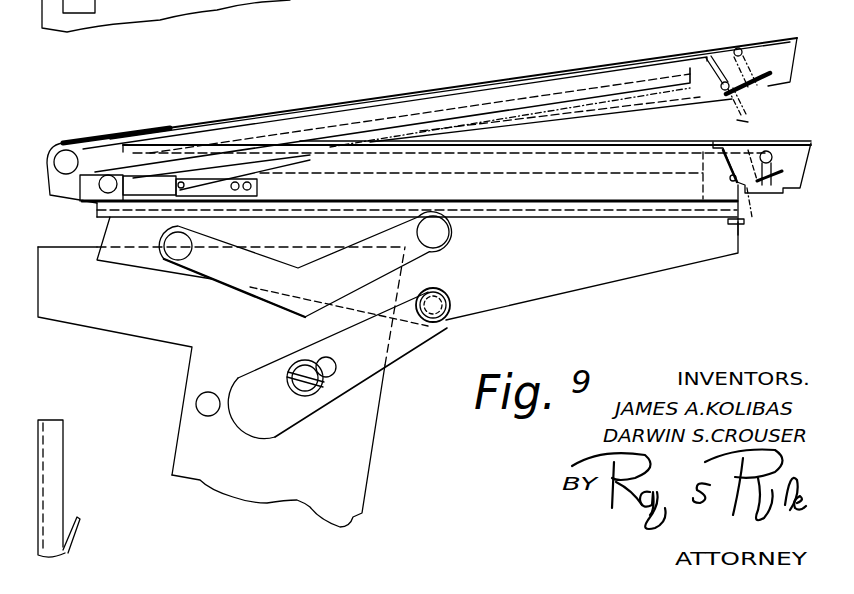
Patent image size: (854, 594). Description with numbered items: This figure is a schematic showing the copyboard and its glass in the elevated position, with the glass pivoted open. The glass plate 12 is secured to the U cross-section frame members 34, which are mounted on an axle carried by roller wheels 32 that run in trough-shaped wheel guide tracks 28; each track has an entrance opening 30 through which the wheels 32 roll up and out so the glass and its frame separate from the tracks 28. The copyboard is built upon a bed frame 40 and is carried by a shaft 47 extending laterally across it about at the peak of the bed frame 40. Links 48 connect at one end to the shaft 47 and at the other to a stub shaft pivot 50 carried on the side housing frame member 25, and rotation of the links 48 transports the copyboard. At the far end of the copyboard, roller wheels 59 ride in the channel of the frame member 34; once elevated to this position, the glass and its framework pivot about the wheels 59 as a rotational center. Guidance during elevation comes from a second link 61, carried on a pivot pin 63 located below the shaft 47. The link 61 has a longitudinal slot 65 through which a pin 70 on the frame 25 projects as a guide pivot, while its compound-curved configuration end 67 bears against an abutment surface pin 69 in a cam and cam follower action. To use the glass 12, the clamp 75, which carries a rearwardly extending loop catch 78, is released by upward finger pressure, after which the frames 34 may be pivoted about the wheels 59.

The glass plate 12 is at (644, 64).
The side housing frame member 25 is at (221, 387).
The wheel guide track 28 is at (62, 467).
The entrance opening 30 is at (70, 514).
The roller wheel 32 is at (58, 153).
The frame member 34 is at (660, 97).
The bed frame 40 is at (559, 299).
The shaft 47 is at (448, 233).
The link 48 is at (305, 264).
The stub shaft pivot 50 is at (166, 238).
The roller wheel 59 is at (87, 208).
The second link 61 is at (337, 388).
The pivot pin 63 is at (450, 297).
The slot 65 is at (332, 360).
The configuration end 67 is at (233, 430).
The abutment surface pin 69 is at (207, 392).
The pin 70 is at (291, 386).
The clamp 75 is at (770, 80).
The loop catch 78 is at (742, 55).